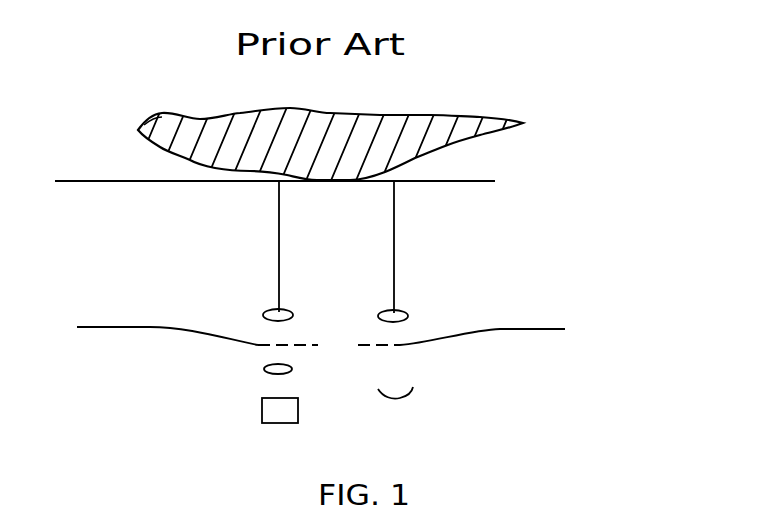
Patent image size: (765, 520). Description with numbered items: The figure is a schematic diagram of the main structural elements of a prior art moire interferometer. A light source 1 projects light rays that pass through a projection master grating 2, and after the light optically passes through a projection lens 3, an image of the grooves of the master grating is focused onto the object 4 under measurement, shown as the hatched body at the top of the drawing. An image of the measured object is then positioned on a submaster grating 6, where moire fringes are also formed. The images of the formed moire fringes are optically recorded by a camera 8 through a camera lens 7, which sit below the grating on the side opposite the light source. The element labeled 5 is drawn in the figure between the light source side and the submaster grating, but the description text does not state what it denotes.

The light source 1 is at (403, 398).
The projection master grating 2 is at (461, 317).
The projection lens 3 is at (404, 311).
The object under measurement 4 is at (418, 140).
The left vertical beam path with terminal 5 is at (268, 312).
The submaster grating 6 is at (197, 321).
The camera lens 7 is at (265, 371).
The camera 8 is at (275, 413).